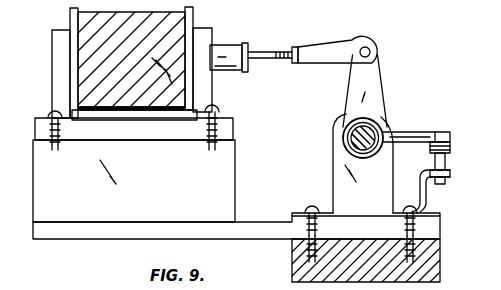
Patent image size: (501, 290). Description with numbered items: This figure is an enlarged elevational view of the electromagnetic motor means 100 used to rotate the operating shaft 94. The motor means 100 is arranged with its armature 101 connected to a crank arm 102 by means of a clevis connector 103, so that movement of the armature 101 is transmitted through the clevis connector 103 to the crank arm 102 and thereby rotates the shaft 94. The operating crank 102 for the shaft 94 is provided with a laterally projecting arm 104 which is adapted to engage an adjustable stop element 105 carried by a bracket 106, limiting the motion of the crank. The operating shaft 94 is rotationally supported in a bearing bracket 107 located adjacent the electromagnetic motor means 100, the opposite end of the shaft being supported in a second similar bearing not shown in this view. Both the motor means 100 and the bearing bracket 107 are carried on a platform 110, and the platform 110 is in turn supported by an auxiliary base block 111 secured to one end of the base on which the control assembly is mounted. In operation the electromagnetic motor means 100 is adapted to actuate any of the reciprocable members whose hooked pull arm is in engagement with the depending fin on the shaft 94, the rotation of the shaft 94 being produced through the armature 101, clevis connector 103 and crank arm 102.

The electromagnetic motor means 100 is at (196, 14).
The armature 101 is at (236, 47).
The crank arm 102 is at (372, 80).
The clevis connector 103 is at (324, 50).
The shaft 94 is at (372, 136).
The laterally projecting arm 104 is at (427, 133).
The adjustable stop element 105 is at (451, 150).
The bracket 106 is at (427, 206).
The bearing bracket 107 is at (333, 170).
The platform 110 is at (63, 241).
The auxiliary base block 111 is at (292, 252).